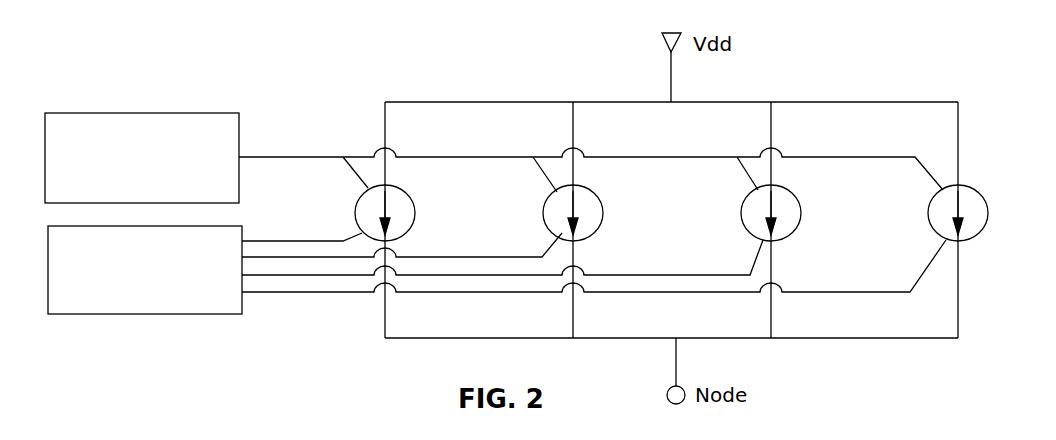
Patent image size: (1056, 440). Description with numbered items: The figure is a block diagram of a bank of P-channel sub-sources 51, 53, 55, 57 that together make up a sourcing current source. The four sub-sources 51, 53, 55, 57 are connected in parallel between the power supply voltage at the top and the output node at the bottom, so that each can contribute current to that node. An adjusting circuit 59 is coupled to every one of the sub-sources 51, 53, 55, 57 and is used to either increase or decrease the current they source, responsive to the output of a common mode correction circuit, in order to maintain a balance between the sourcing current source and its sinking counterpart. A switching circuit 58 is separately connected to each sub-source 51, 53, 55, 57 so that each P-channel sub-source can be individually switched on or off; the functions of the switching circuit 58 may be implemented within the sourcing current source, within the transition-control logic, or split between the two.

The P-channel sub-source 51 is at (413, 197).
The P-channel sub-source 53 is at (602, 202).
The P-channel sub-source 55 is at (802, 200).
The P-channel sub-source 57 is at (988, 198).
The switching circuit 58 is at (187, 315).
The adjusting circuit 59 is at (185, 112).